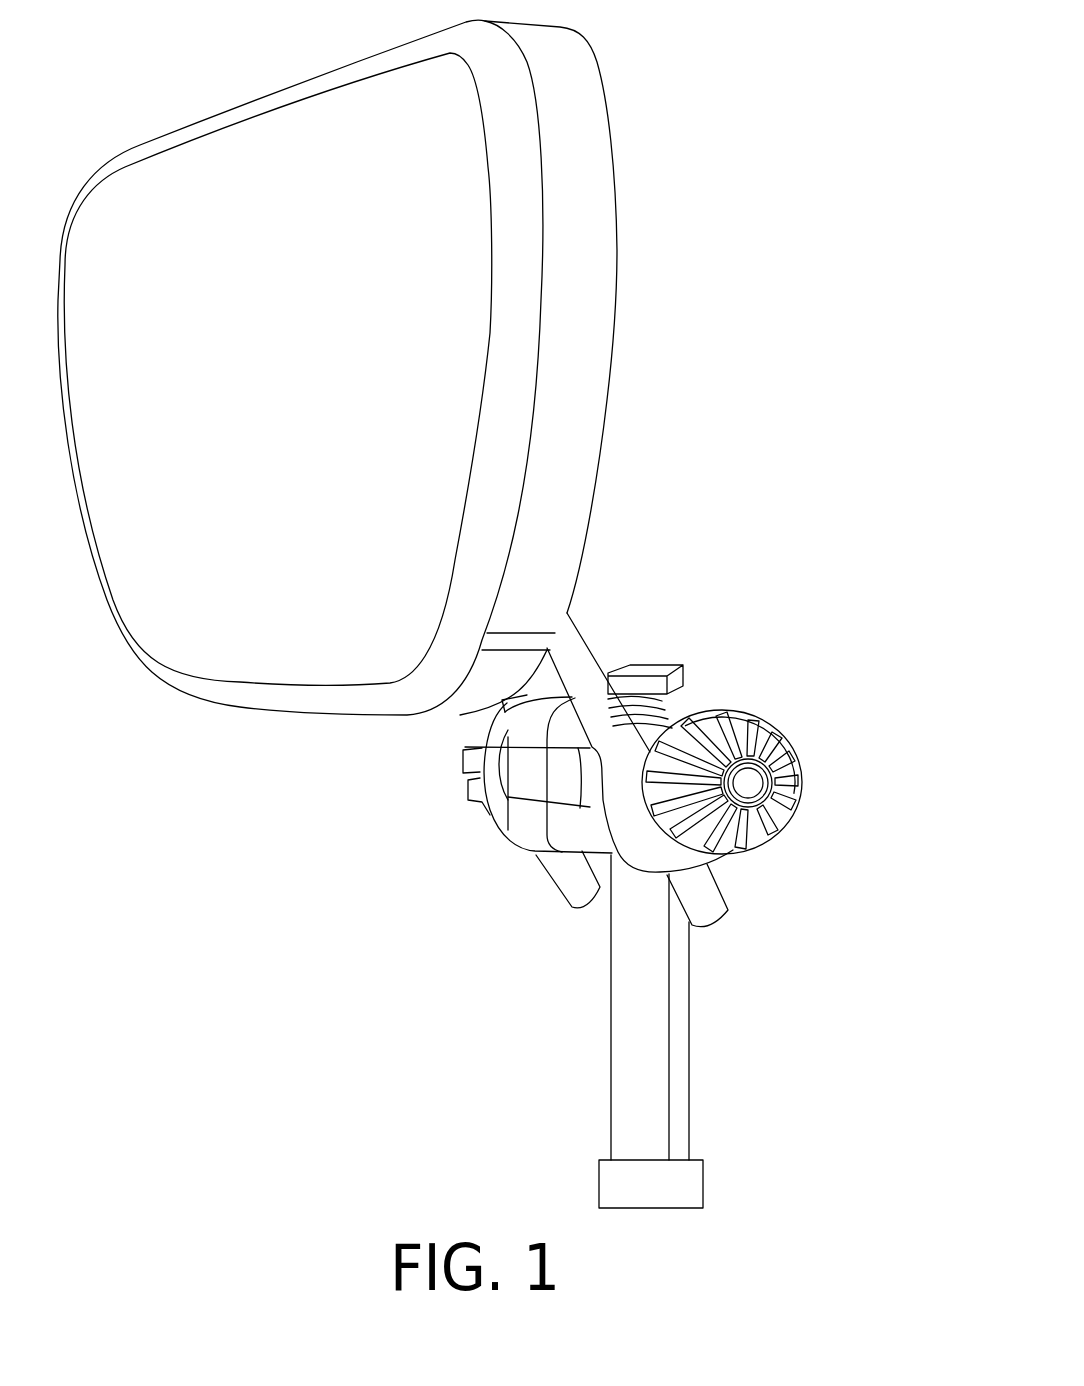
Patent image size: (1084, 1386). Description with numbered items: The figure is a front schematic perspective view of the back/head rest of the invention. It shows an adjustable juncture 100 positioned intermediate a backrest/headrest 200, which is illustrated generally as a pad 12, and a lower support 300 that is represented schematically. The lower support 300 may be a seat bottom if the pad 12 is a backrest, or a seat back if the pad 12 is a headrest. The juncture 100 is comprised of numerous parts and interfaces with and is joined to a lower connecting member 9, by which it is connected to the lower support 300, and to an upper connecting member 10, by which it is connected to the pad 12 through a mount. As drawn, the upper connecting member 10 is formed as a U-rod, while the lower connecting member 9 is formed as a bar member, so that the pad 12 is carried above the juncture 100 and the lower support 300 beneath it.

The backrest/headrest 200 is at (858, 15).
The adjustable juncture 100 is at (858, 650).
The pad 12 is at (314, 667).
The upper connecting member 10 is at (603, 708).
The lower connecting member 9 is at (680, 1082).
The lower support 300 is at (630, 1196).